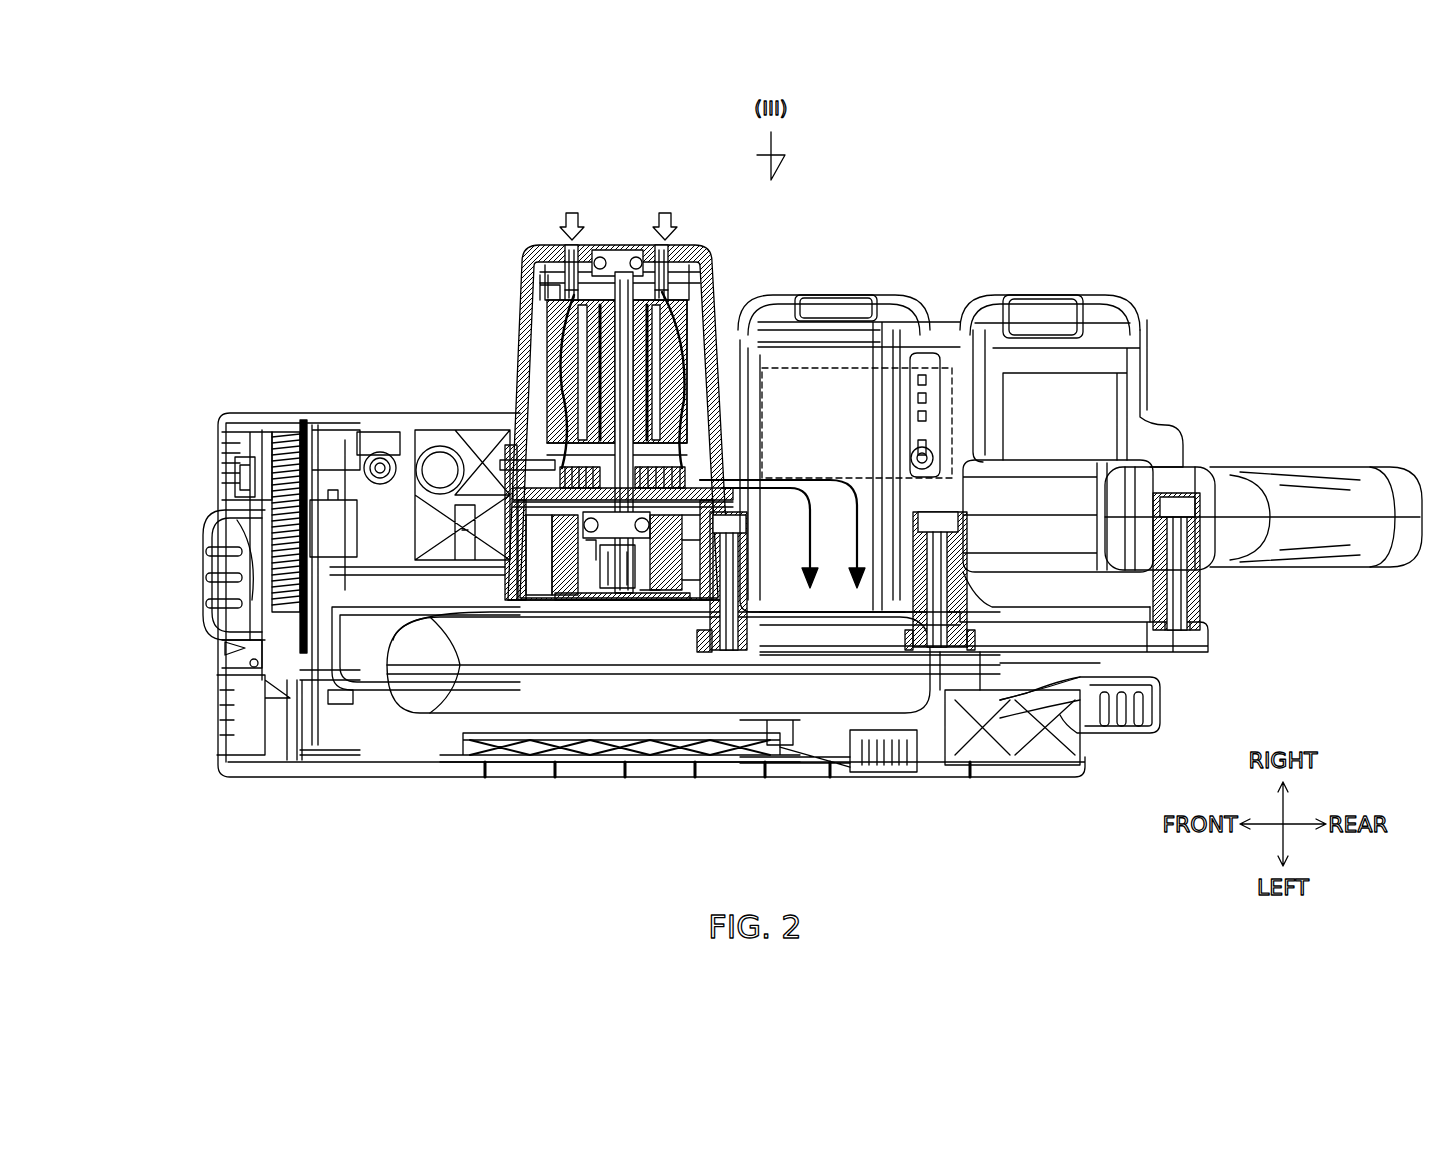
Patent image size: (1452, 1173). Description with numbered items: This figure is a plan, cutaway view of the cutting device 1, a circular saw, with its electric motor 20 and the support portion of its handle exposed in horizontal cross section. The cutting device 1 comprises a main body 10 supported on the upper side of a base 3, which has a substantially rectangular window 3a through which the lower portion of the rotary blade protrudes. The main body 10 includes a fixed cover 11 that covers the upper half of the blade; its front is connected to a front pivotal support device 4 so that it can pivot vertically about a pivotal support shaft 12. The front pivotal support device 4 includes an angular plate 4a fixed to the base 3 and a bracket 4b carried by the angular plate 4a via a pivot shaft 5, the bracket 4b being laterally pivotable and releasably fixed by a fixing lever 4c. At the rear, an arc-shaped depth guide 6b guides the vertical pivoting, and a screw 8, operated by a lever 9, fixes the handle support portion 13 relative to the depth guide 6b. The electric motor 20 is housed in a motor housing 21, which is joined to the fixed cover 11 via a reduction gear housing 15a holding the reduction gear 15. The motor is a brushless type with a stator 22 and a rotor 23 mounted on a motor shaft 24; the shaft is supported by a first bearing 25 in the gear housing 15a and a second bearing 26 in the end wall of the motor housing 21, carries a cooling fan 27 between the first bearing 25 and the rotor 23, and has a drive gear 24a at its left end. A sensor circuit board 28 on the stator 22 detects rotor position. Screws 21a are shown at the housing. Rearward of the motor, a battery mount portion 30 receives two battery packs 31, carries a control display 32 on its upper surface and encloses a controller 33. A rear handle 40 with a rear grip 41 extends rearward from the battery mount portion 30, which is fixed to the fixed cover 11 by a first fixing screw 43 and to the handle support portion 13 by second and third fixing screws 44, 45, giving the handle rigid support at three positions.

The cutting device 1 is at (368, 800).
The base 3 is at (992, 778).
The window 3a is at (958, 690).
The front pivotal support device 4 is at (265, 540).
The angular plate 4a is at (283, 430).
The bracket 4b is at (330, 440).
The fixing lever 4c is at (220, 567).
The pivot shaft 5 is at (268, 690).
The depth guide 6b is at (950, 612).
The screw 8 is at (1030, 765).
The lever 9 is at (1120, 733).
The main body 10 is at (632, 700).
The fixed cover 11 is at (540, 700).
The pivotal support shaft 12 is at (335, 704).
The handle support portion 13 is at (1190, 655).
The reduction gear 15 is at (660, 590).
The reduction gear housing 15a is at (470, 640).
The electric motor 20 is at (520, 305).
The motor housing 21 is at (722, 300).
The housing screws 21a is at (567, 255).
The stator 22 is at (548, 335).
The rotor 23 is at (700, 262).
The motor shaft 24 is at (627, 272).
The drive gear 24a is at (612, 600).
The first bearing 25 is at (590, 525).
The second bearing 26 is at (600, 250).
The cooling fan 27 is at (492, 470).
The sensor circuit board 28 is at (548, 285).
The battery mount portion 30 is at (1092, 400).
The battery packs 31 is at (850, 295).
The control display 32 is at (925, 425).
The controller 33 is at (778, 380).
The rear handle 40 is at (1355, 462).
The rear grip 41 is at (1395, 567).
The first fixing screw 43 is at (735, 560).
The second fixing screw 44 is at (880, 612).
The third fixing screw 45 is at (1180, 572).